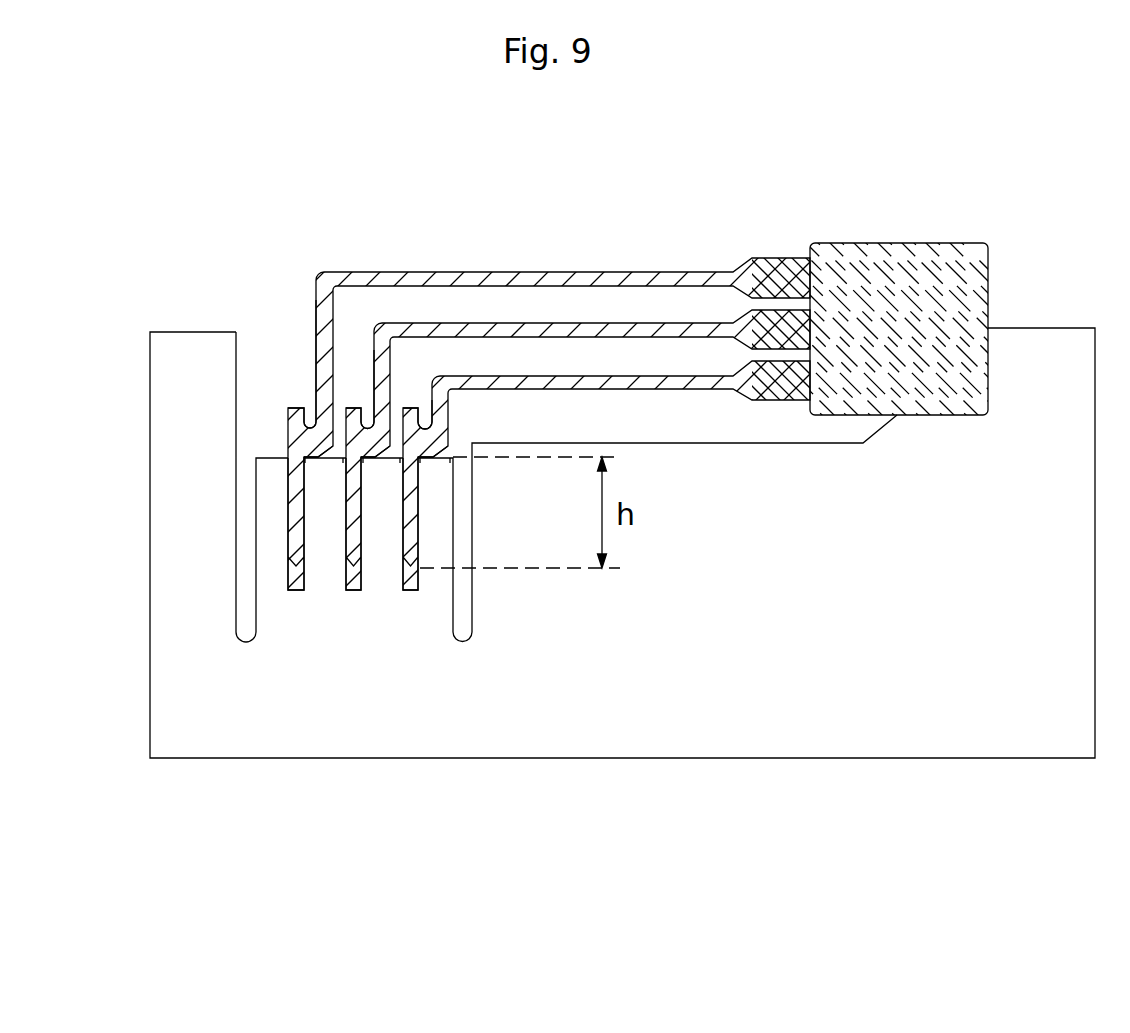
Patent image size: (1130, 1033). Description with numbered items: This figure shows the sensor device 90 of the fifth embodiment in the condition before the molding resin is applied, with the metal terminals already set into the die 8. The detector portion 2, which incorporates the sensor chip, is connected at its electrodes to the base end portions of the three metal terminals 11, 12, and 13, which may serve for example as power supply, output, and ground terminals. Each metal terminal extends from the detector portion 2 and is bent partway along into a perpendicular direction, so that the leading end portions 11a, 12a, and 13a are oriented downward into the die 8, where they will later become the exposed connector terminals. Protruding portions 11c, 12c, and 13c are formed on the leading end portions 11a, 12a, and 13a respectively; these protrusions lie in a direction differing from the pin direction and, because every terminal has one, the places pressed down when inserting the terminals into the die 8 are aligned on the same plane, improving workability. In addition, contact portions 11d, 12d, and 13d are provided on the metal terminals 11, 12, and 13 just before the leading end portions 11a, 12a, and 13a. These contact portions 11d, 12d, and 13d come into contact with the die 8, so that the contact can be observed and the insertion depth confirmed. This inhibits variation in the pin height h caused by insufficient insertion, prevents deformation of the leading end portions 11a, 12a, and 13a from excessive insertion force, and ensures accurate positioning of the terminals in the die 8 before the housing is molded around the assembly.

The detector portion 2 is at (833, 268).
The die 8 is at (995, 722).
The metal terminal 11 is at (650, 380).
The leading end portion 11a is at (420, 514).
The protruding portion 11c is at (411, 405).
The contact portion 11d is at (428, 455).
The metal terminal 12 is at (590, 330).
The leading end portion 12a is at (345, 517).
The protruding portion 12c is at (352, 405).
The contact portion 12d is at (372, 458).
The metal terminal 13 is at (535, 272).
The leading end portion 13a is at (290, 516).
The protruding portion 13c is at (292, 405).
The contact portion 13d is at (312, 458).
The sensor device 90 is at (696, 877).